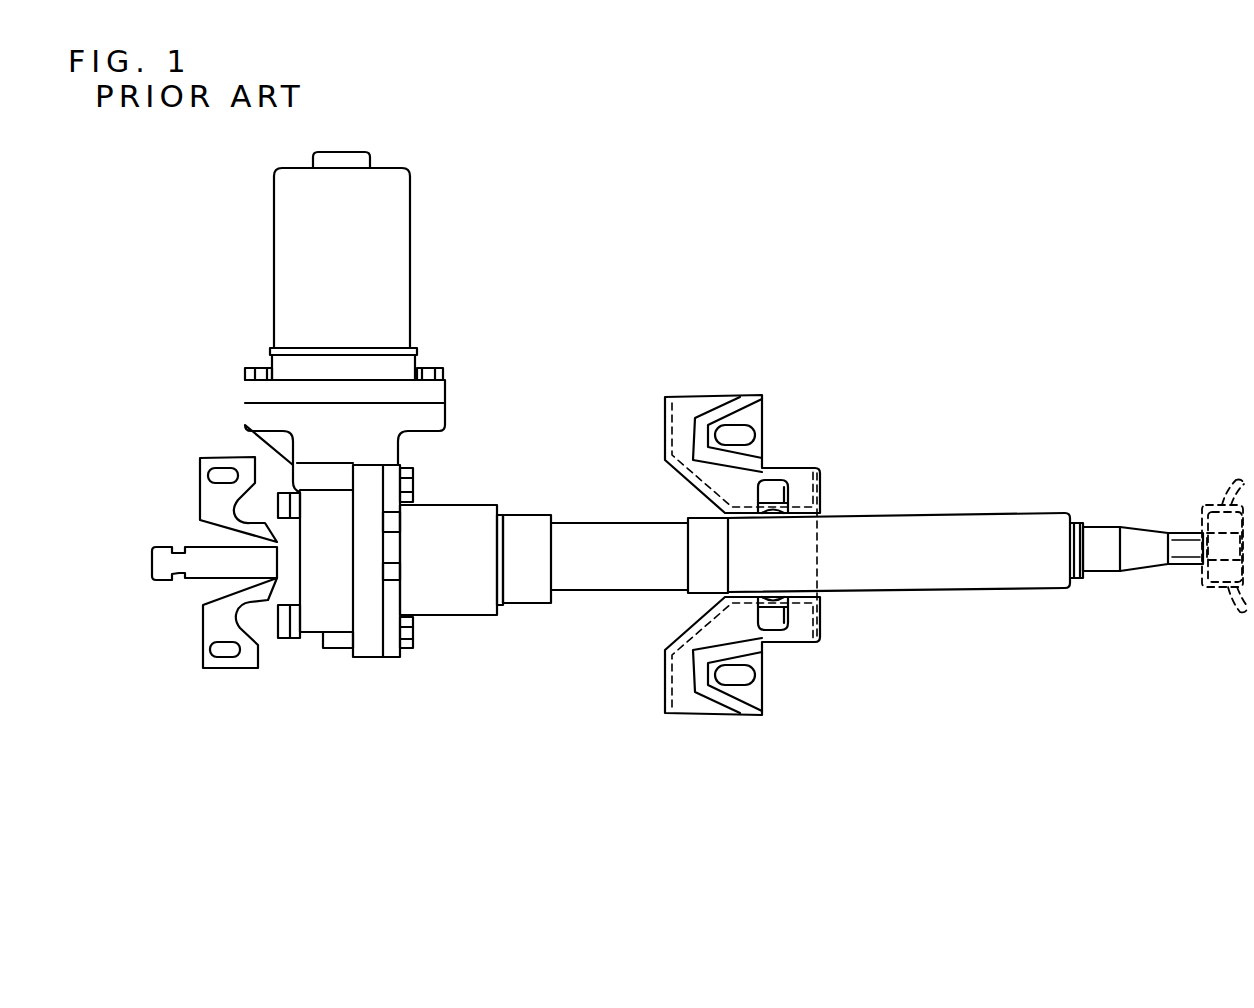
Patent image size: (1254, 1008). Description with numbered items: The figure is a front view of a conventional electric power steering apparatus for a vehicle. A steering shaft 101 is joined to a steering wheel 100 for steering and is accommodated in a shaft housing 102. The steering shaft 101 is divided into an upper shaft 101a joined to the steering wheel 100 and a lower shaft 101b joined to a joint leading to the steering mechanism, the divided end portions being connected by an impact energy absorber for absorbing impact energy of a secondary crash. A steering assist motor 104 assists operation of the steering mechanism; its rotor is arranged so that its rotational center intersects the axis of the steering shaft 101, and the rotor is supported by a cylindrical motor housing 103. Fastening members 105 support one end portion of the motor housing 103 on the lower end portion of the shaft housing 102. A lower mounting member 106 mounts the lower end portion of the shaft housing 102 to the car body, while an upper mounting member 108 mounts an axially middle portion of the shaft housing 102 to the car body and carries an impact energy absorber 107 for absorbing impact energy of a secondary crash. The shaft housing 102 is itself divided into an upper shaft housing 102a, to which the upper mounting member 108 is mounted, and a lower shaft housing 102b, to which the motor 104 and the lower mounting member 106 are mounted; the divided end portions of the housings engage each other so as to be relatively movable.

The steering wheel 100 is at (1220, 500).
The steering shaft 101 is at (1098, 521).
The upper shaft 101a is at (1103, 573).
The lower shaft 101b is at (203, 583).
The shaft housing 102 is at (938, 512).
The upper shaft housing 102a is at (943, 588).
The lower shaft housing 102b is at (590, 598).
The motor housing 103 is at (403, 232).
The steering assist motor 104 is at (403, 192).
The fastening members 105 is at (255, 363).
The lower mounting member 106 is at (222, 456).
The impact energy absorber 107 is at (762, 414).
The upper mounting member 108 is at (695, 399).